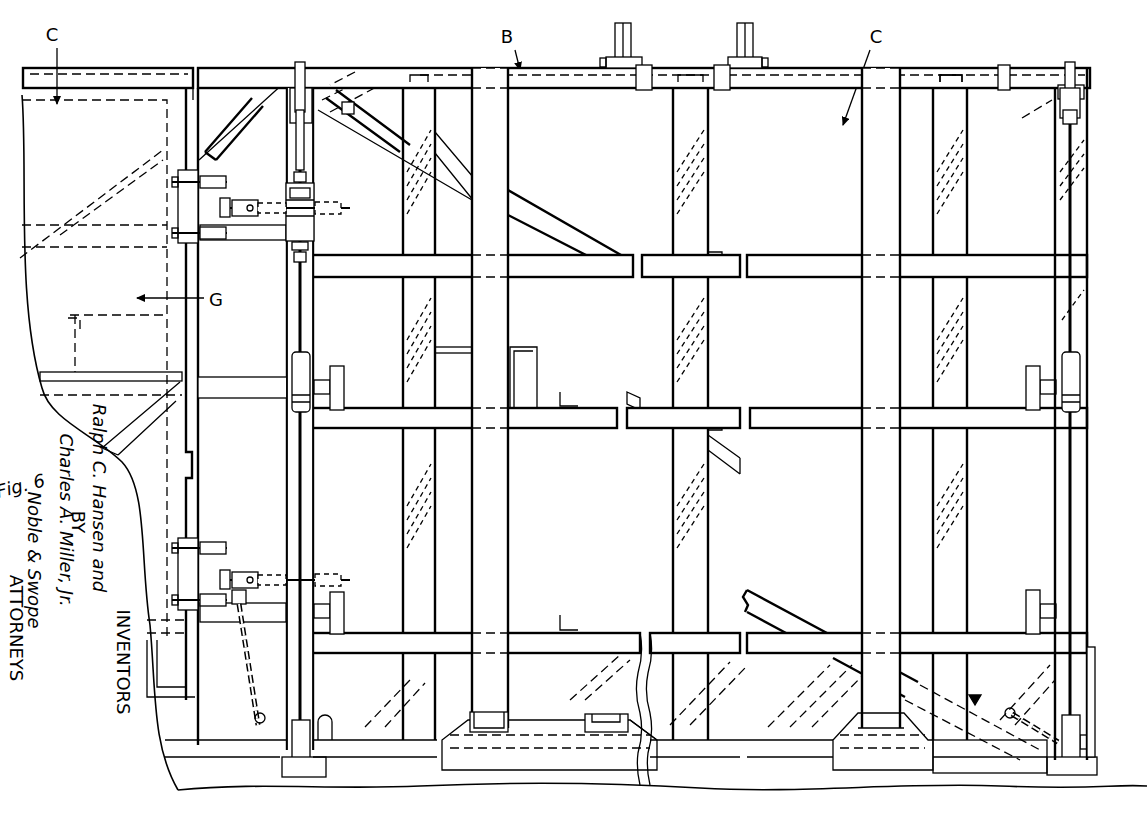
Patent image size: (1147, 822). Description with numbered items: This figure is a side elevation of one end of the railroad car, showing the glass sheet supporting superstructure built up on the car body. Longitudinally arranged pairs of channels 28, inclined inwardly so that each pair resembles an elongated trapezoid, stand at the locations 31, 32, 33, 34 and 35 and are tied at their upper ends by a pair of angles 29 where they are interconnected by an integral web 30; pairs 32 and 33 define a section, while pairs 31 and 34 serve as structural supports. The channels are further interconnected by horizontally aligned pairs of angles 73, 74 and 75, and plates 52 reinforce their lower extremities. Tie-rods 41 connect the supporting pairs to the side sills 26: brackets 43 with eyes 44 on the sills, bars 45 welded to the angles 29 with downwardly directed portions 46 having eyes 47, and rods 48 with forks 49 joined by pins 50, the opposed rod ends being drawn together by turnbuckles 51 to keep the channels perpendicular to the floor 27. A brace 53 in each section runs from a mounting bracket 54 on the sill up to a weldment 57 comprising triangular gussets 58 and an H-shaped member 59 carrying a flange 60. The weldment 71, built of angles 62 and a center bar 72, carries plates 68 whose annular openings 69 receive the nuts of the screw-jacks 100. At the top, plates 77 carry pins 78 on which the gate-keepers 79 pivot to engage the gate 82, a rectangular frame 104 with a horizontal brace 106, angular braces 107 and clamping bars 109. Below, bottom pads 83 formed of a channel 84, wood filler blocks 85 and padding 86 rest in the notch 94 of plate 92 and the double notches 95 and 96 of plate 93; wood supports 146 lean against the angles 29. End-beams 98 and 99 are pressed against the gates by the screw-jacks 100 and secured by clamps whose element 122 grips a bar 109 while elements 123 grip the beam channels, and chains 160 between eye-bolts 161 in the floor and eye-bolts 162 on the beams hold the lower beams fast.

The side sills 26 is at (785, 782).
The floor 27 is at (418, 740).
The pairs of channels 28 is at (690, 192).
The angles 29 is at (826, 78).
The web 30 is at (943, 72).
The pair of channels 31 is at (1089, 228).
The pair of channels 32 is at (955, 235).
The pair of channels 33 is at (420, 240).
The pair of channels 34 is at (315, 340).
The pair of channels 35 is at (193, 86).
The tie-rods 41 is at (305, 478).
The brackets 43 is at (326, 745).
The eyes 44 is at (1105, 690).
The bars 45 is at (300, 70).
The downwardly directed portions 46 is at (312, 78).
The eyes 47 is at (691, 93).
The rods 48 is at (305, 316).
The forks 49 is at (318, 130).
The pins 50 is at (355, 108).
The turnbuckles 51 is at (305, 372).
The plates 52 is at (590, 668).
The brace 53 is at (515, 215).
The mounting bracket 54 is at (976, 698).
The weldment 57 is at (240, 112).
The triangular gussets 58 is at (272, 125).
The H-shaped member 59 is at (257, 92).
The flange 60 is at (195, 130).
The angles 62 is at (318, 182).
The plate 68 is at (296, 184).
The annular opening 69 is at (320, 247).
The weldment 71 is at (325, 193).
The center bar 72 is at (320, 225).
The angles 73 is at (800, 248).
The angles 74 is at (238, 388).
The angles 75 is at (277, 607).
The plates 77 is at (606, 64).
The pins 78 is at (644, 62).
The gate-keepers 79 is at (612, 31).
The gate 82 is at (100, 72).
The bottom pads 83 is at (481, 716).
The channel 84 is at (510, 725).
The wood filler blocks 85 is at (505, 716).
The padding 86 is at (489, 712).
The plate 92 is at (918, 726).
The plate 93 is at (548, 722).
The notch 94 is at (935, 755).
The notch 95 is at (615, 735).
The notch 96 is at (490, 735).
The end-beam 98 is at (344, 388).
The end-beam 99 is at (344, 617).
The screw-jacks 100 is at (352, 210).
The rectangular frame 104 is at (145, 82).
The horizontal brace 106 is at (105, 378).
The angularly disposed braces 107 is at (125, 432).
The bars 109 is at (190, 446).
The clamping element 122 is at (176, 208).
The clamping elements 123 is at (215, 570).
The supports 146 is at (878, 190).
The chains 160 is at (257, 660).
The eye-bolts 161 is at (635, 711).
The eye-bolts 162 is at (250, 615).